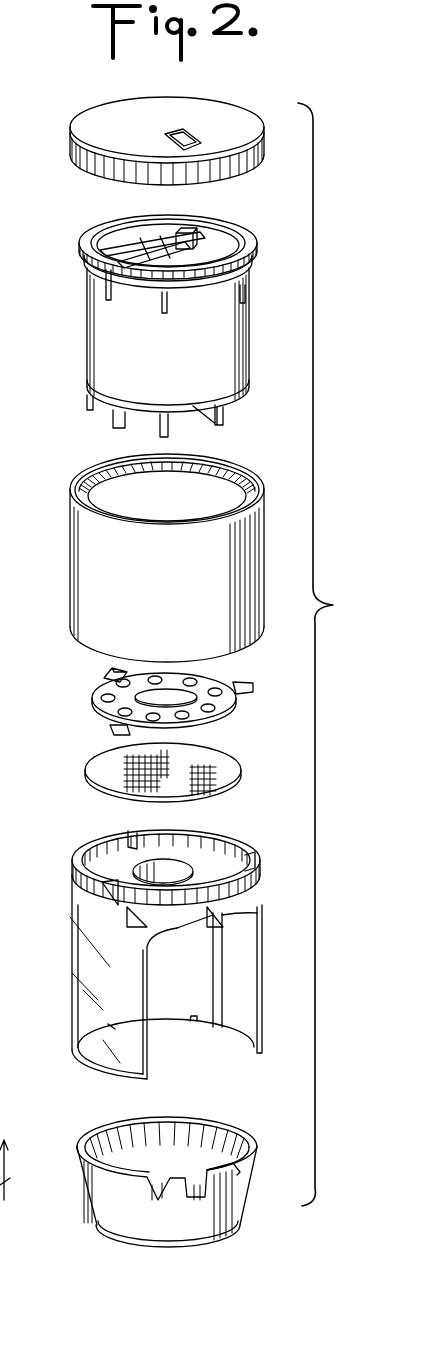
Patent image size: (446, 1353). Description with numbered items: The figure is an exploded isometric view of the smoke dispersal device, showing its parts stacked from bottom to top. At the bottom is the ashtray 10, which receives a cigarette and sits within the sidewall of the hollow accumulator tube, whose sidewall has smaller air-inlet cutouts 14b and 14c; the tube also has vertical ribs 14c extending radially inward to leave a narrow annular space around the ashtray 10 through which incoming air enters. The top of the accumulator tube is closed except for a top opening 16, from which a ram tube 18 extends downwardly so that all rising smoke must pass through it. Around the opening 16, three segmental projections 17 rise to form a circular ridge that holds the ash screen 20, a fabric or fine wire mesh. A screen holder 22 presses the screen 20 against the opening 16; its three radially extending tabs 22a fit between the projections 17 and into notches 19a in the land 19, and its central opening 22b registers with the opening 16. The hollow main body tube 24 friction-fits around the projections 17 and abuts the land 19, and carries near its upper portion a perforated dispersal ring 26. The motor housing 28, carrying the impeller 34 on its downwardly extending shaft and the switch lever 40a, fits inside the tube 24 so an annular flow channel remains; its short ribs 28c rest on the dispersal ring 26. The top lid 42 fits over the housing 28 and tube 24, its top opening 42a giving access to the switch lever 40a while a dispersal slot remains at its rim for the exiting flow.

The ashtray 10 is at (92, 1210).
The cutout 14b is at (113, 1027).
The cutout / vertical rib 14c is at (88, 952).
The top opening 16 is at (173, 868).
The segmental projections 17 is at (243, 838).
The ram tube 18 is at (178, 932).
The land 19 is at (251, 876).
The notches 19a is at (125, 842).
The ash screen 20 is at (234, 768).
The screen holder 22 is at (203, 681).
The tabs 22a is at (104, 729).
The central opening 22b is at (183, 703).
The main body tube 24 is at (244, 567).
The dispersal ring 26 is at (222, 474).
The motor housing 28 is at (234, 344).
The short ribs 28c is at (243, 298).
The impeller 34 is at (238, 409).
The switch lever 40a is at (186, 233).
The top lid 42 is at (247, 125).
The top opening 42a is at (184, 133).